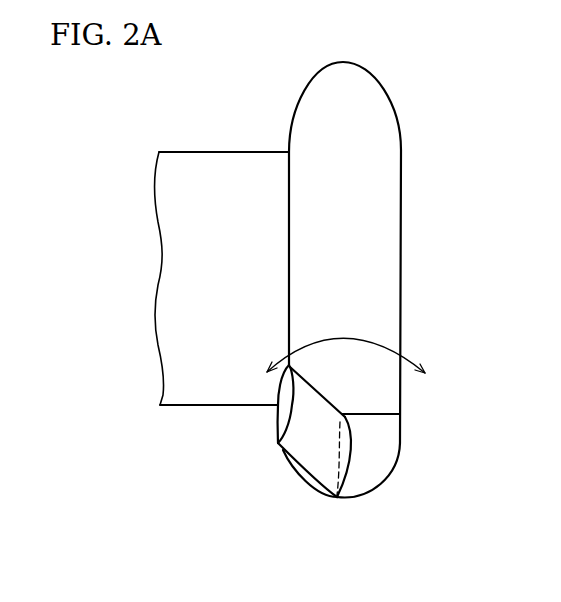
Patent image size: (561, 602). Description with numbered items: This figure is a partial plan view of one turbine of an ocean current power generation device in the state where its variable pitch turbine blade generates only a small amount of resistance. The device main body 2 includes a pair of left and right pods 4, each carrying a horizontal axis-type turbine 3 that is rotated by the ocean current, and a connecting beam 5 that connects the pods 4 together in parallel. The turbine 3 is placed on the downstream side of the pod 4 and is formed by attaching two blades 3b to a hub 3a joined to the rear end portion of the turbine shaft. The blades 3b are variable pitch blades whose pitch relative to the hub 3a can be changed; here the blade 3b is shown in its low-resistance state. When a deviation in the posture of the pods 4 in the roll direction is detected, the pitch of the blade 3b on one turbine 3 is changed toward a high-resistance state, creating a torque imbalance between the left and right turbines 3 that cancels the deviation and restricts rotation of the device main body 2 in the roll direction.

The device main body 2 is at (276, 113).
The turbine 3 is at (365, 498).
The hub 3a is at (373, 457).
The variable pitch turbine blade 3b is at (293, 440).
The pod 4 is at (367, 107).
The connecting beam 5 is at (205, 163).